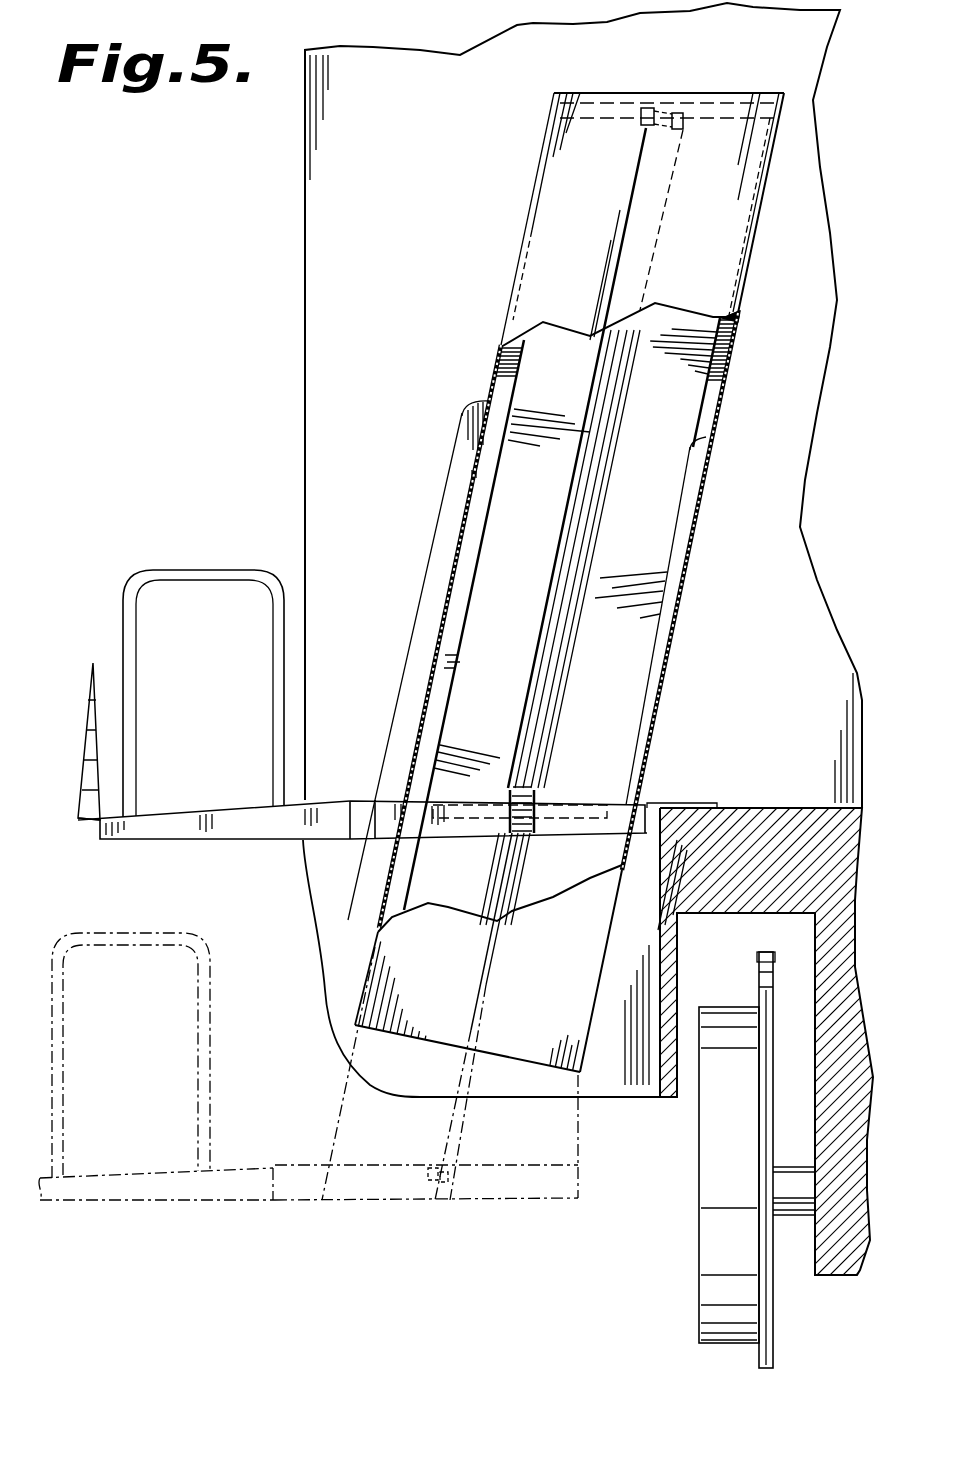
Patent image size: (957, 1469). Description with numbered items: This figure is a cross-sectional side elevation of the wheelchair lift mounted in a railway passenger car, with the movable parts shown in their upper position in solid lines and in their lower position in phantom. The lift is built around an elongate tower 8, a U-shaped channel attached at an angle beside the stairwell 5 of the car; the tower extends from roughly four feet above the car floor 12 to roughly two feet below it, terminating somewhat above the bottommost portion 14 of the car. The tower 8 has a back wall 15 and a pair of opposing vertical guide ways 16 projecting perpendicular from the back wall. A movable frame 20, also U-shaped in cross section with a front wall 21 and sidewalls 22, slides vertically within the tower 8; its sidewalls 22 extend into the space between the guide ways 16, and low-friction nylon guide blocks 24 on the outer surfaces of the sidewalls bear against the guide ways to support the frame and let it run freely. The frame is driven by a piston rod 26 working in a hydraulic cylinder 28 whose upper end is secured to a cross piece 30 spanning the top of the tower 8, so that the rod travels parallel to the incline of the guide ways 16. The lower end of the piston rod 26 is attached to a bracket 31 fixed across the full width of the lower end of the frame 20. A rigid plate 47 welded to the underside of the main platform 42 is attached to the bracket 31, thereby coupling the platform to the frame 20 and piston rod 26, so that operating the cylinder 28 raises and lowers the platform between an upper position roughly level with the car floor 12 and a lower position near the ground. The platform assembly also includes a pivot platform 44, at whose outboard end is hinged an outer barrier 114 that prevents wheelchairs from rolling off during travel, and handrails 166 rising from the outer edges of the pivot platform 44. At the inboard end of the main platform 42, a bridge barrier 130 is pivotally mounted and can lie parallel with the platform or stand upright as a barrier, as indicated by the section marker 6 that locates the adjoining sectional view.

The stairwell 5 is at (653, 1027).
The section line 6- 6 is at (790, 15).
The tower 8 is at (530, 193).
The car floor 12 is at (807, 803).
The bottommost portion 14 is at (643, 1095).
The back wall 15 is at (540, 243).
The guide ways 16 is at (497, 367).
The frame 20 is at (470, 563).
The front wall 21 is at (527, 385).
The sidewalls 22 is at (490, 432).
The guide blocks 24 is at (487, 458).
The piston rod 26 is at (547, 775).
The hydraulic cylinder 28 is at (593, 503).
The cross piece 30 is at (596, 100).
The bracket 31 is at (440, 840).
The main platform 42 is at (378, 836).
The pivot platform 44 is at (163, 839).
The rigid plate 47 is at (605, 800).
The outer barrier 114 is at (92, 663).
The bridge barrier 130 is at (690, 803).
The handrails 166 is at (200, 567).